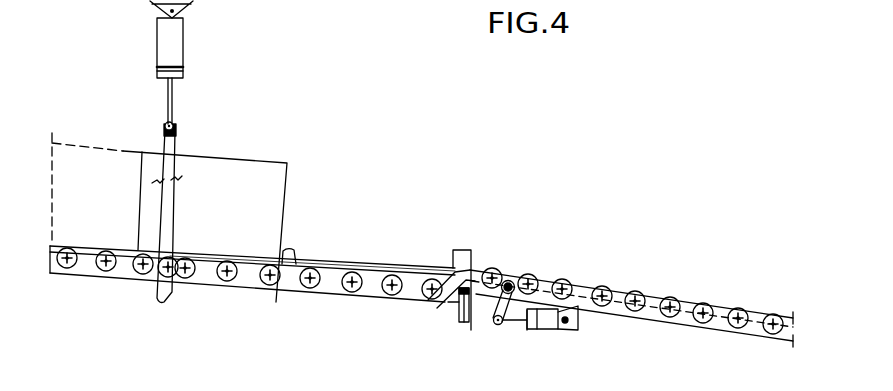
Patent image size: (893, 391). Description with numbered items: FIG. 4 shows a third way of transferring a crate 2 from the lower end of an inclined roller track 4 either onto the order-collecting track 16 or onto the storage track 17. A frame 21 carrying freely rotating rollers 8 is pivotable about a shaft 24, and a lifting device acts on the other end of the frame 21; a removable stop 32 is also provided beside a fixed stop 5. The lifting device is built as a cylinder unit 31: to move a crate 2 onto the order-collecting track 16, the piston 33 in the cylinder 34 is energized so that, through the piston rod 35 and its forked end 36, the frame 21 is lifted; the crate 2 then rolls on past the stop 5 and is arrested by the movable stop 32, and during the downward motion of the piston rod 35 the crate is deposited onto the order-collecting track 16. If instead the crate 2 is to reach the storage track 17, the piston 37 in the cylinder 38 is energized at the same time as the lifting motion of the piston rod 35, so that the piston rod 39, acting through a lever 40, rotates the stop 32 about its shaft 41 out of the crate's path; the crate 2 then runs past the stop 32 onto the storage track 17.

The crate 2 is at (258, 207).
The roller track 4 is at (127, 265).
The stop 5 is at (290, 248).
The freely rotating rollers 8 is at (389, 290).
The order-collecting track 16 is at (414, 271).
The storage track 17 is at (761, 322).
The frame 21 is at (370, 285).
The shaft 24 is at (720, 317).
The pneumatic cylinder 31 is at (191, 48).
The removable stop 32 is at (470, 250).
The piston 33 is at (172, 67).
The cylinder 34 is at (172, 23).
The piston rod 35 is at (168, 90).
The forked end 36 is at (174, 126).
The piston 37 is at (535, 329).
The cylinder 38 is at (565, 323).
The piston rod 39 is at (501, 325).
The lever 40 is at (472, 330).
The shaft 41 is at (473, 322).